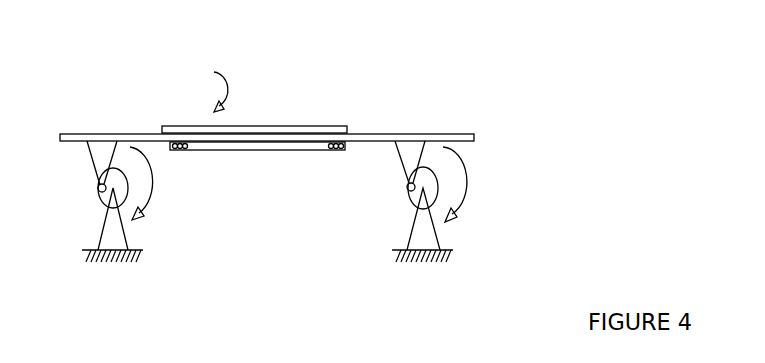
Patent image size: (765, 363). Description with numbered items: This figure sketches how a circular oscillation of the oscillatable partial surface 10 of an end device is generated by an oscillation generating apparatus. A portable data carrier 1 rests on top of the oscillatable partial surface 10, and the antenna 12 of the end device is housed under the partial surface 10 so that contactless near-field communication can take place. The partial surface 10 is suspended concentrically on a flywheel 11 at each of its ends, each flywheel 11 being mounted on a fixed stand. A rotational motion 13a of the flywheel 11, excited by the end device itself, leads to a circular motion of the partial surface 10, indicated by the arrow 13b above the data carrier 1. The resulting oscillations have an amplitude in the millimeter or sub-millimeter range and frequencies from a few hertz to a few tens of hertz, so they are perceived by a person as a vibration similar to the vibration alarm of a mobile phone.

The portable data carrier 1 is at (343, 127).
The oscillatable partial surface 10 is at (455, 134).
The flywheel 11 is at (103, 205).
The antenna 12 is at (283, 148).
The rotational motion 13a is at (155, 191).
The rotation direction of substrate 13b is at (190, 125).